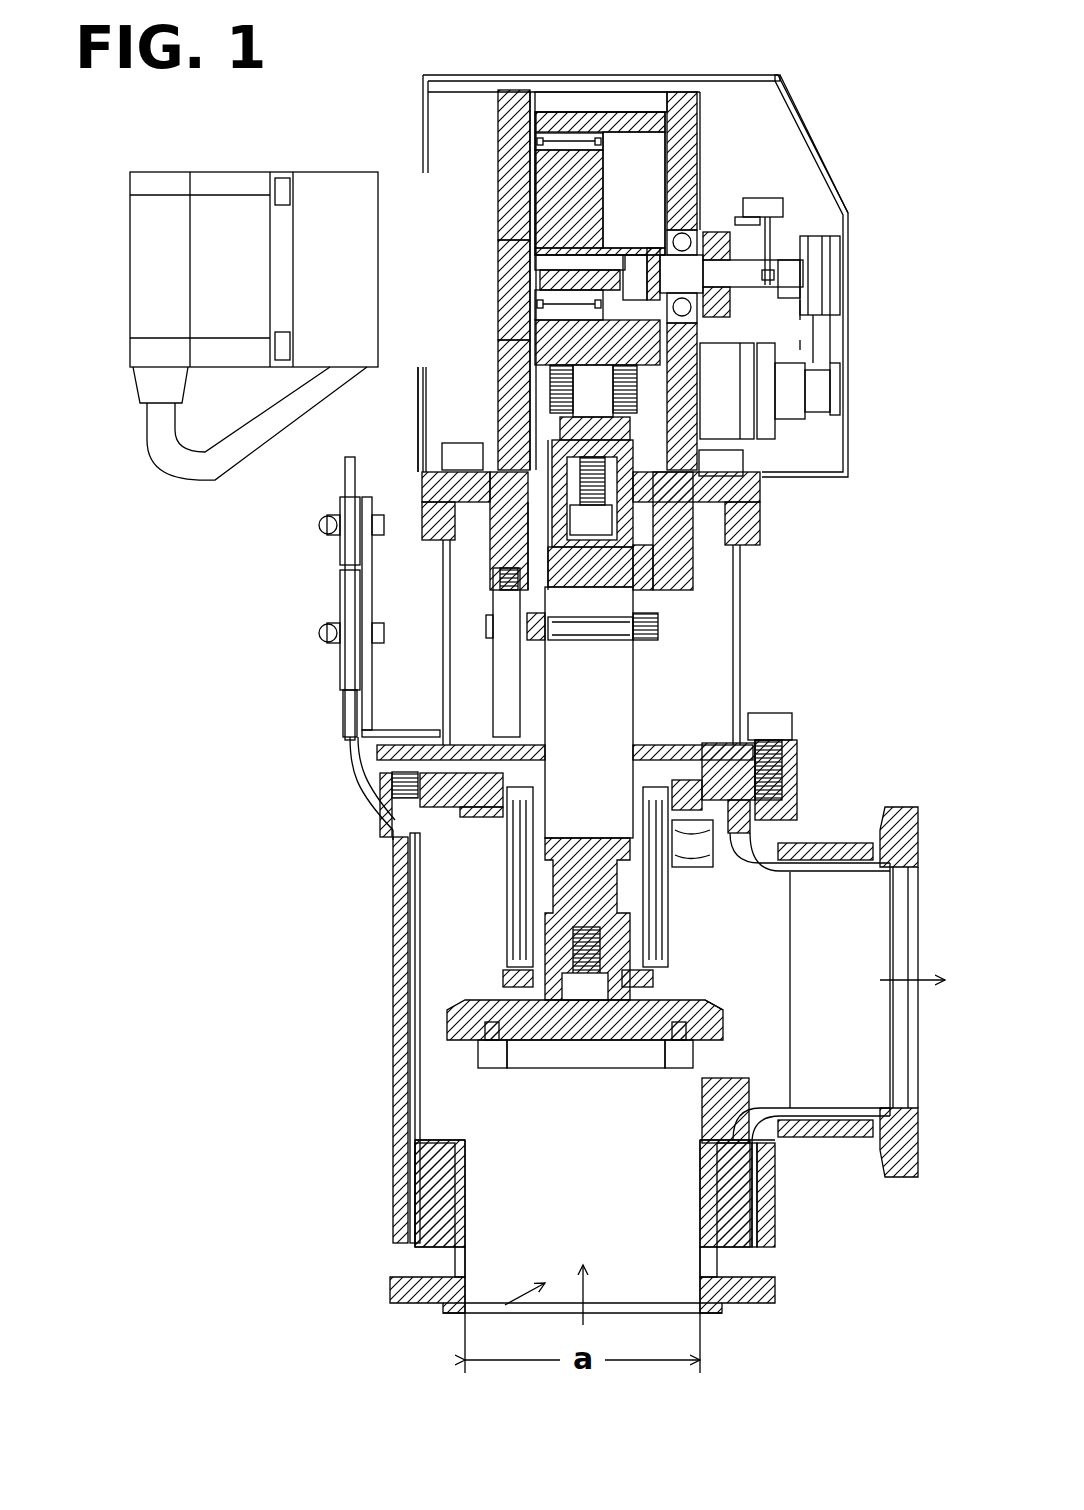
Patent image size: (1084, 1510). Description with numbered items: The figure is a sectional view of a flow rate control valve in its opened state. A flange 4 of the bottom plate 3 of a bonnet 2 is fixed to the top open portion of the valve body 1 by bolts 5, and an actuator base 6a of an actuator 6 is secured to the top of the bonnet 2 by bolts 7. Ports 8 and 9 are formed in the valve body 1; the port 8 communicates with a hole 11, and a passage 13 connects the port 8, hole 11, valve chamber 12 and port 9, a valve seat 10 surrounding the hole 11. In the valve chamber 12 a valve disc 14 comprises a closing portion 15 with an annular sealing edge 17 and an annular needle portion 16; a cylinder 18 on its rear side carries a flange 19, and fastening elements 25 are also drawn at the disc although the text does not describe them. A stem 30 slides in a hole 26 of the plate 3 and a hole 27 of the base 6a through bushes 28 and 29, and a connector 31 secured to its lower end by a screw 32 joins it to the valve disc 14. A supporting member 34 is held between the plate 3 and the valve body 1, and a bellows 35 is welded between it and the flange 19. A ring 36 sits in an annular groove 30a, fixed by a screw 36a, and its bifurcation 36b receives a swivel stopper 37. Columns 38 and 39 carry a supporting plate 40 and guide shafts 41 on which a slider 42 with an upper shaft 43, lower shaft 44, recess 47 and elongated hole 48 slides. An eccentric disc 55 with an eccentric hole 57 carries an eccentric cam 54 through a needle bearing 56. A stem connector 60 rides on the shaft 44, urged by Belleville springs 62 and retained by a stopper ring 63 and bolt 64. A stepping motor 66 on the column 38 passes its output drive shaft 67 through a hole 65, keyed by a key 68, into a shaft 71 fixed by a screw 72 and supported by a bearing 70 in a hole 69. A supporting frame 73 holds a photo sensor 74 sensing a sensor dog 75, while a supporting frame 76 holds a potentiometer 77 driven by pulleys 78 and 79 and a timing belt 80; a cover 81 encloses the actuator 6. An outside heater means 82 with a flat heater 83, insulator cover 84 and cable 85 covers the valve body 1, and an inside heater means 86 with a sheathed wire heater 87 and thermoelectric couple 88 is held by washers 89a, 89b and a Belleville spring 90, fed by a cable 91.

The valve body 1 is at (915, 792).
The bonnet 2 is at (745, 690).
The bottom plate 3 is at (440, 733).
The flange 4 is at (790, 770).
The bolts 5 is at (790, 718).
The actuator 6 is at (383, 158).
The actuator base 6a is at (420, 445).
The bolts 7 is at (440, 452).
The port 8 is at (690, 1300).
The port 9 is at (895, 1080).
The valve seat 10 is at (393, 1130).
The hole 11 is at (440, 1140).
The valve chamber 12 is at (888, 1000).
The passage 13 is at (470, 1310).
The valve disc 14 is at (445, 990).
The closing portion 15 is at (705, 1010).
The annular needle portion 16 is at (690, 1070).
The annular sealing edge 17 is at (715, 1040).
The cylinder 18 is at (705, 975).
The flange 19 is at (410, 875).
The bolt 25 is at (700, 1055).
The hole 26 is at (555, 770).
The hole 27 is at (693, 562).
The bush 28 is at (633, 745).
The bush 29 is at (640, 580).
The stem 30 is at (635, 672).
The annular groove 30a is at (590, 642).
The connector 31 is at (602, 950).
The screw 32 is at (600, 1070).
The supporting member 34 is at (700, 775).
The bellows 35 is at (408, 862).
The ring 36 is at (660, 630).
The screw 36a is at (633, 627).
The bifurcation 36b is at (487, 626).
The swivel stopper 37 is at (495, 690).
The column 38 is at (425, 80).
The column 39 is at (780, 78).
The supporting plate 40 is at (560, 110).
The guide shafts 41 is at (680, 92).
The slider 42 is at (545, 112).
The upper shaft 43 is at (640, 112).
The lower shaft 44 is at (562, 395).
The recess 47 is at (500, 105).
The elongated hole 48 is at (705, 118).
The eccentric cam 54 is at (498, 150).
The eccentric disc 55 is at (748, 150).
The needle bearing 56 is at (610, 130).
The eccentric hole 57 is at (532, 222).
The stem connector 60 is at (585, 390).
The Belleville springs 62 is at (520, 358).
The stopper ring 63 is at (745, 490).
The bolt 64 is at (360, 556).
The hole 65 is at (500, 300).
The stepping motor 66 is at (300, 172).
The output drive shaft 67 is at (550, 142).
The key 68 is at (560, 280).
The hole 69 is at (688, 232).
The bearing 70 is at (845, 330).
The shaft 71 is at (622, 195).
The screw 72 is at (555, 332).
The supporting frame 73 is at (840, 252).
The photo sensor 74 is at (822, 310).
The sensor dog 75 is at (785, 205).
The supporting frame 76 is at (760, 440).
The potentiometer 77 is at (745, 468).
The pulley 78 is at (840, 280).
The pulley 79 is at (840, 400).
The timing belt 80 is at (830, 348).
The cover 81 is at (798, 76).
The outside heater means 82 is at (375, 1230).
The flat heater 83 is at (808, 845).
The insulator cover 84 is at (880, 832).
The cable 85 is at (395, 790).
The inside heater means 86 is at (690, 850).
The sheathed wire heater 87 is at (507, 880).
The thermoelectric couple 88 is at (520, 975).
The washer 89a is at (503, 978).
The washer 89b is at (655, 978).
The Belleville spring 90 is at (398, 905).
The cable 91 is at (352, 752).